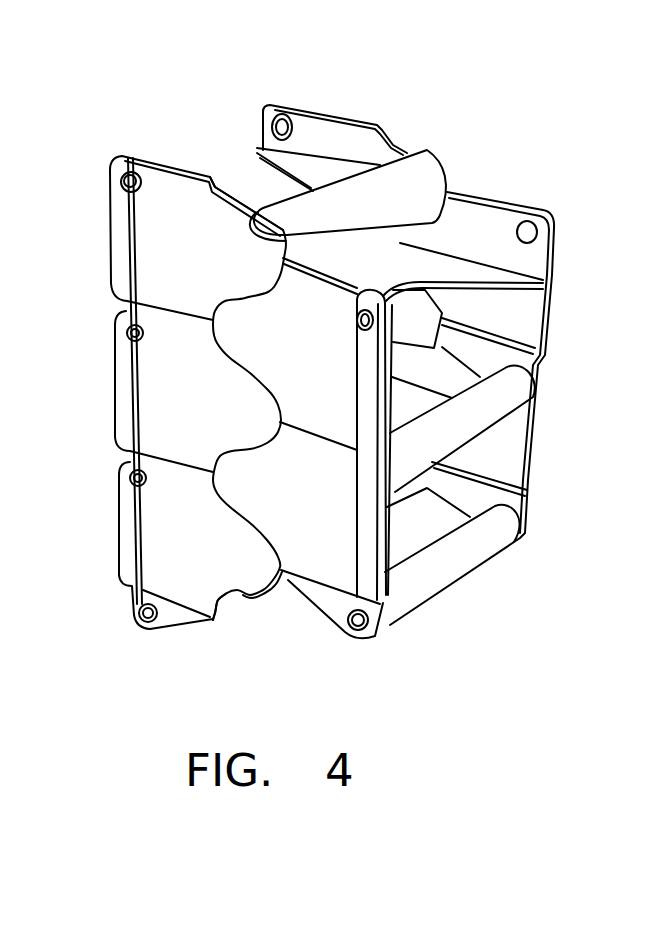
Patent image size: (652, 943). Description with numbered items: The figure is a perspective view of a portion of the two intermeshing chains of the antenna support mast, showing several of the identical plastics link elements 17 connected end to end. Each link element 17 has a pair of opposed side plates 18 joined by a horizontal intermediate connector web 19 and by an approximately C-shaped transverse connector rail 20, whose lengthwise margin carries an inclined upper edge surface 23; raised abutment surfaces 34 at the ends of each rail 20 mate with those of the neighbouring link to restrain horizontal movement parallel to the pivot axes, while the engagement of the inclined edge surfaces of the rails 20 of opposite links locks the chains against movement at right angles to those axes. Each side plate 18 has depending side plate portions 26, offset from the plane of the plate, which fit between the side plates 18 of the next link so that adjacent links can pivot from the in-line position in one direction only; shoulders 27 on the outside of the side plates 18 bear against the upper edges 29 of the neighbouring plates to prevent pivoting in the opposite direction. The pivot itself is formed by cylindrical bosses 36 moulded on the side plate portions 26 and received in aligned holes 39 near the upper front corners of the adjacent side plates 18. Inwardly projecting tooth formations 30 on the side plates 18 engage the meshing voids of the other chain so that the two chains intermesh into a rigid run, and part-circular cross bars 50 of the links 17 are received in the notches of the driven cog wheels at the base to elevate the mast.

The link element 17 is at (112, 247).
The side plate 18 is at (155, 215).
The intermediate connector web 19 is at (432, 250).
The transverse connector rail 20 is at (432, 200).
The upper edge surface 23 is at (383, 140).
The side plate portion 26 is at (178, 613).
The shoulder 27 is at (200, 618).
The upper edge 29 is at (163, 163).
The tooth formation 30 is at (216, 265).
The raised abutment surface 34 is at (253, 207).
The cylindrical boss 36 is at (127, 333).
The hole 39 is at (122, 170).
The cross bar 50 is at (477, 415).